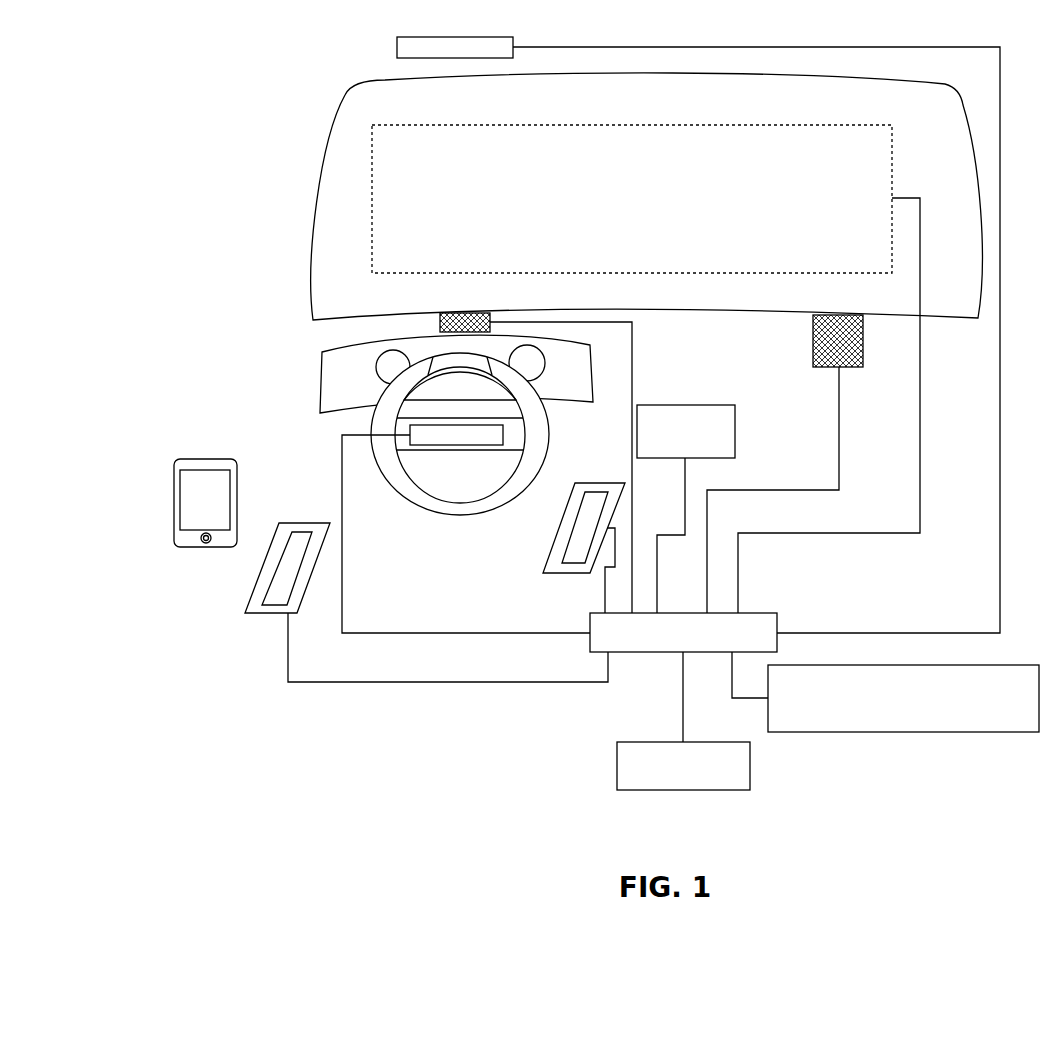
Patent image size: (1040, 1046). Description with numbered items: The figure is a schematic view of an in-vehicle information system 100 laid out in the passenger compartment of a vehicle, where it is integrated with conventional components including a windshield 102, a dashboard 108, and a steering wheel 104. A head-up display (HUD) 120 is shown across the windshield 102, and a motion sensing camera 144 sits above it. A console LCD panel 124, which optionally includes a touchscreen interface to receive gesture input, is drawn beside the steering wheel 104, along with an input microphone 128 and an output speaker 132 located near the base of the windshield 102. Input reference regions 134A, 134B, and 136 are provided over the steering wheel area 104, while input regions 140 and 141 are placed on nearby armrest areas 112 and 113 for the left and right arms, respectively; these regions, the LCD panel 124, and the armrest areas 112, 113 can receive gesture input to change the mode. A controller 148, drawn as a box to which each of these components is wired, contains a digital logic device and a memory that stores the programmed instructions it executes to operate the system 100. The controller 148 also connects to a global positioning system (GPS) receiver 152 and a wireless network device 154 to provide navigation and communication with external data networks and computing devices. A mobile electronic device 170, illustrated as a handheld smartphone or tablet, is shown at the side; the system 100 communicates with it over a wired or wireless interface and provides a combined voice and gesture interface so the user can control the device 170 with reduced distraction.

The in-vehicle information system 100 is at (220, 160).
The windshield 102 is at (317, 172).
The steering wheel 104 is at (478, 517).
The dashboard 108 is at (318, 398).
The armrest area 112 is at (306, 590).
The armrest area 113 is at (551, 543).
The head-up display (HUD) 120 is at (670, 125).
The console LCD panel 124 is at (713, 405).
The input microphone 128 is at (440, 318).
The output speaker 132 is at (845, 367).
The input reference region 134A is at (382, 388).
The input reference region 134B is at (530, 392).
The input reference region 136 is at (350, 435).
The input region 140 is at (293, 580).
The input region 141 is at (600, 494).
The motion sensing camera 144 is at (465, 37).
The controller 148 is at (752, 613).
The global positioning system (GPS) receiver 152 is at (617, 771).
The wireless network device 154 is at (830, 732).
The mobile electronic device 170 is at (176, 493).